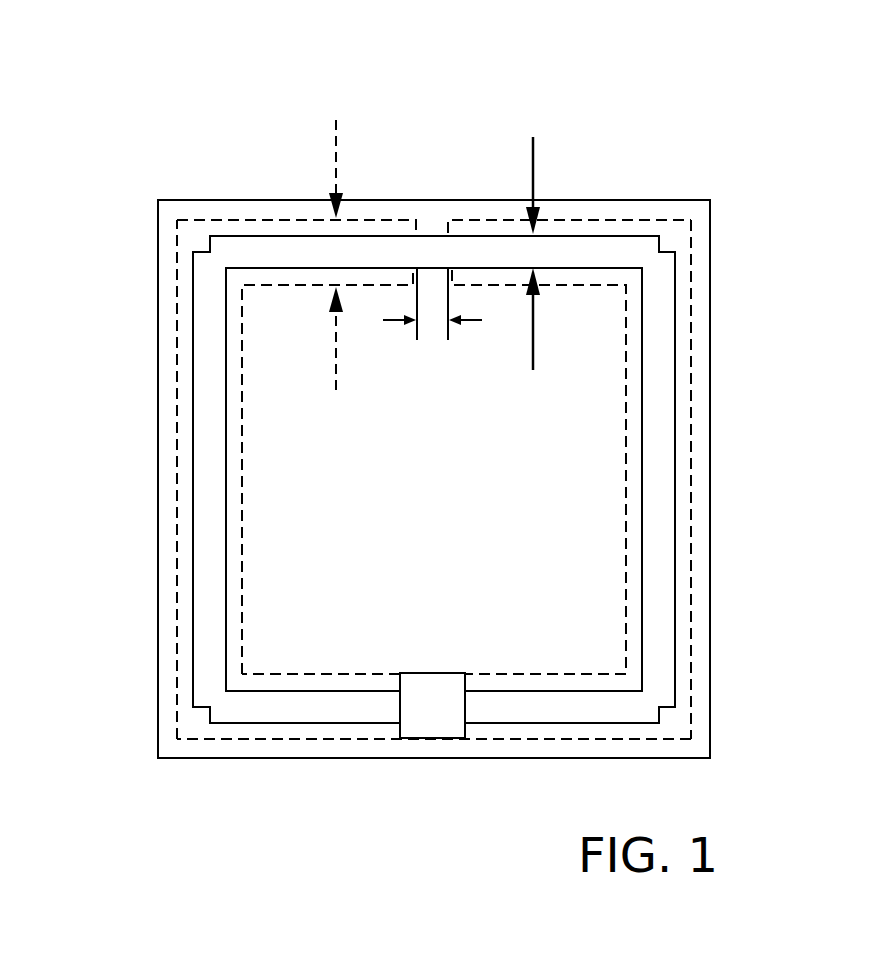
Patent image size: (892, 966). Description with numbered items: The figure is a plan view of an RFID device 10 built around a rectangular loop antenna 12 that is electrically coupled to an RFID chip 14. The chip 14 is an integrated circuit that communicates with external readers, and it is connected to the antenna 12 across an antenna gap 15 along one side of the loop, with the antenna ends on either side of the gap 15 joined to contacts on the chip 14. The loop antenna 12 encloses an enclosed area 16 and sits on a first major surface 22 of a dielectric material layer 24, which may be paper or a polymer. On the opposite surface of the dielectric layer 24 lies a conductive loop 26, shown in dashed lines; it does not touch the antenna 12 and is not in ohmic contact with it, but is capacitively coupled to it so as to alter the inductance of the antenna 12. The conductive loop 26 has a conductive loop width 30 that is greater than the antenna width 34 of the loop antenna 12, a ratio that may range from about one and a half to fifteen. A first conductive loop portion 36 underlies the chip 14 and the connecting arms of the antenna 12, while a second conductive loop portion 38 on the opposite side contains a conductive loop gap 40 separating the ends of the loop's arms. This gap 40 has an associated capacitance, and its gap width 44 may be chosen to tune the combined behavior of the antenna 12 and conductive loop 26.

The RFID device 10 is at (247, 83).
The loop antenna 12 is at (667, 588).
The RFID chip 14 is at (442, 742).
The antenna gap 15 is at (428, 748).
The enclosed area 16 is at (418, 487).
The first major surface 22 is at (168, 658).
The dielectric material layer 24 is at (158, 727).
The conductive loop 26 is at (693, 728).
The conductive loop width 30 is at (337, 142).
The antenna width 34 is at (535, 160).
The first conductive loop portion 36 is at (305, 738).
The second conductive loop portion 38 is at (620, 218).
The conductive loop gap 40 is at (433, 220).
The gap width 44 is at (432, 342).